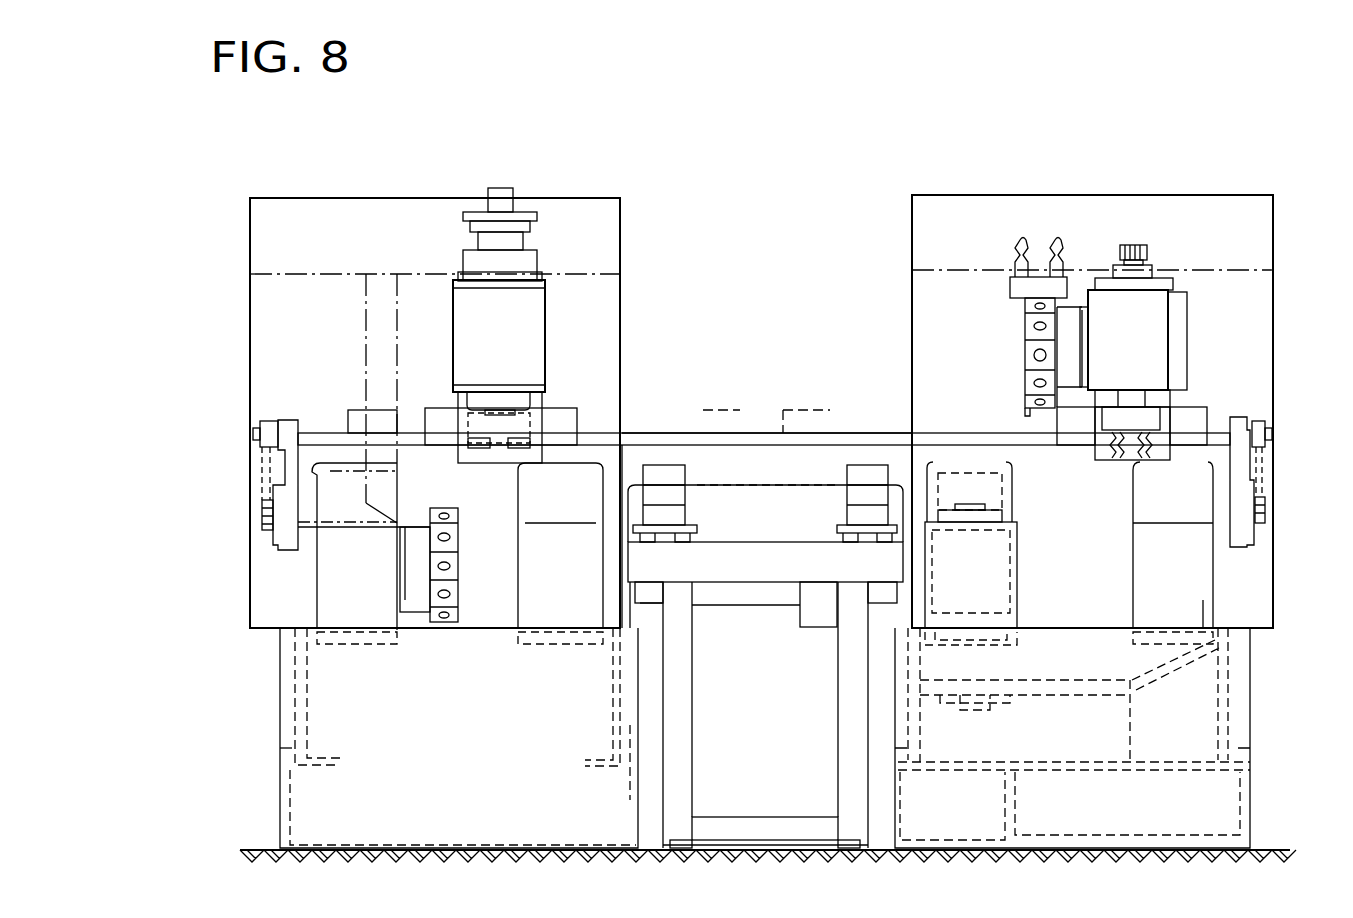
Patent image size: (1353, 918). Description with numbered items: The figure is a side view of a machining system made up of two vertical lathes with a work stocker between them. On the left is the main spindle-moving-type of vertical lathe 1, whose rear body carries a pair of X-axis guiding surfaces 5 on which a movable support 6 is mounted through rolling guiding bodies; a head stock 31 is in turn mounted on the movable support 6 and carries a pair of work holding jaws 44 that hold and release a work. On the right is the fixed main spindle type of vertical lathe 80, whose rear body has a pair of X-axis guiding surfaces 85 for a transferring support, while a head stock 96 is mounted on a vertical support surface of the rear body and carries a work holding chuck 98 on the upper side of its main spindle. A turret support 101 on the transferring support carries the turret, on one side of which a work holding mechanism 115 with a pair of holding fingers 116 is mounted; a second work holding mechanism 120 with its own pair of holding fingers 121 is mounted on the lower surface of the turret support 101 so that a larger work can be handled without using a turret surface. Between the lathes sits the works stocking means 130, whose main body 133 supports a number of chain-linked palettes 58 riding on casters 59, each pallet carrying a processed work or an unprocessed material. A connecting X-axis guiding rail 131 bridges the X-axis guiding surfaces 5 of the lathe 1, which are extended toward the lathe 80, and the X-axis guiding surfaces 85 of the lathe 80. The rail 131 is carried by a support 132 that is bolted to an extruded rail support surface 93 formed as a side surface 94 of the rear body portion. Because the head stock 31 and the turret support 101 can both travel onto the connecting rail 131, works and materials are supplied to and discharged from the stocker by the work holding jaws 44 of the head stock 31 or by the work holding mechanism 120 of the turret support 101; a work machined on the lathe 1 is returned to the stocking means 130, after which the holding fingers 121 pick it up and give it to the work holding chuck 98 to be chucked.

The main spindle-moving-type of vertical lathe 1 is at (611, 186).
The X-axis guiding surfaces 5 is at (598, 433).
The movable support 6 is at (557, 418).
The head stock 31 is at (512, 352).
The work holding jaws 44 is at (481, 448).
The palettes 58 is at (838, 535).
The casters 59 is at (852, 535).
The fixed main spindle type of vertical lathe 80 is at (1296, 199).
The X-axis guiding surfaces 85 is at (957, 434).
The extruded rail support surface 93 is at (618, 470).
The side surface 94 is at (616, 630).
The head stock 96 is at (985, 586).
The work holding chuck 98 is at (995, 492).
The turret support 101 is at (1140, 364).
The work holding mechanism 115 is at (1012, 279).
The holding fingers 116 is at (1058, 240).
The work holding mechanism 120 is at (1112, 472).
The holding fingers 121 is at (1150, 447).
The works stocking means 130 is at (697, 505).
The connecting X-axis guiding rail 131 is at (727, 440).
The support 132 is at (767, 400).
The main body 133 is at (683, 755).